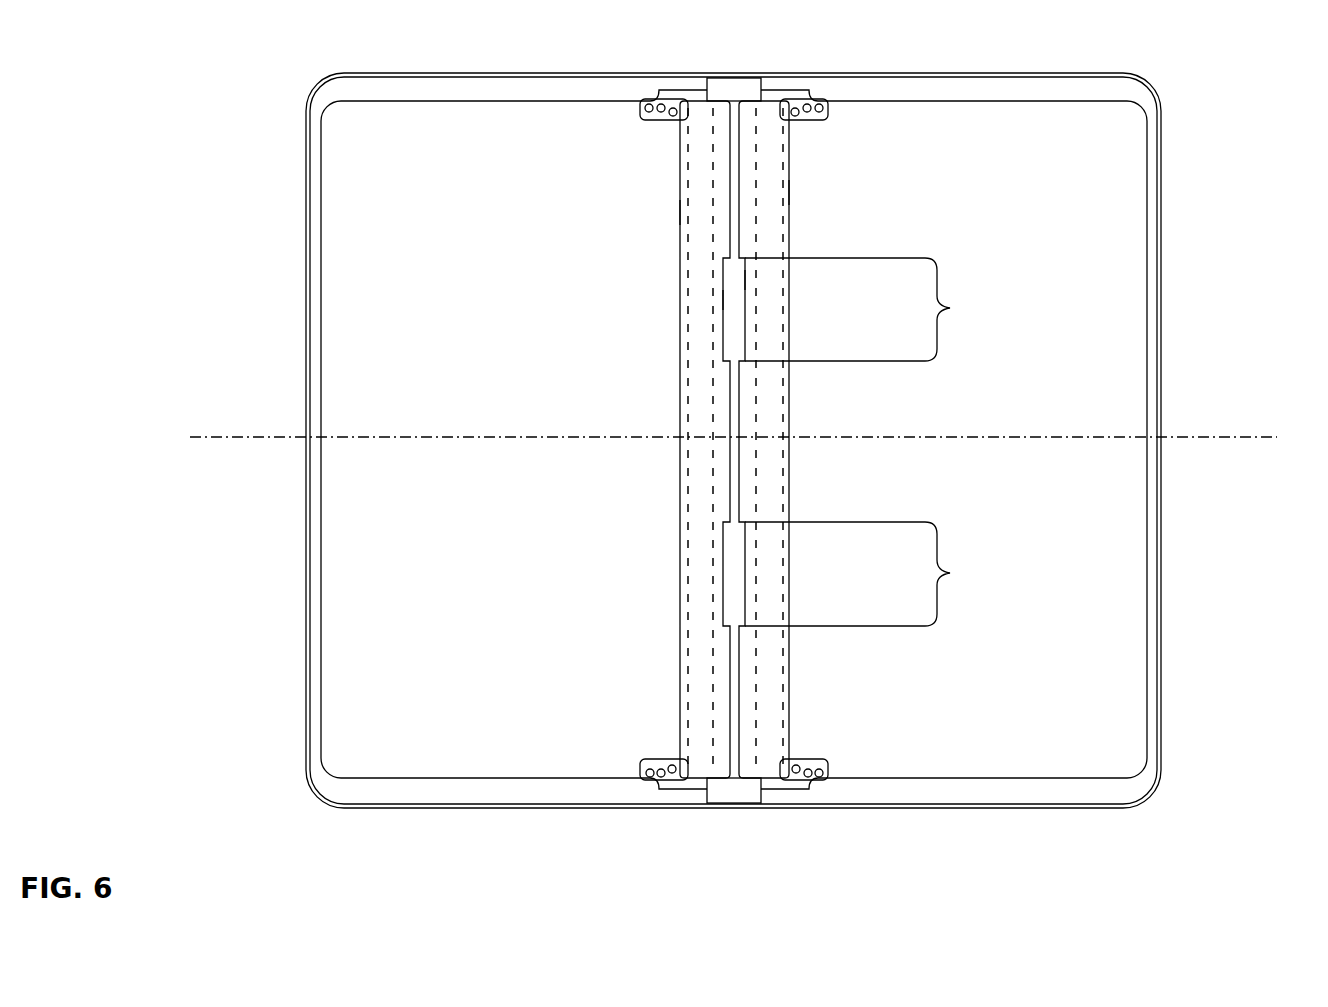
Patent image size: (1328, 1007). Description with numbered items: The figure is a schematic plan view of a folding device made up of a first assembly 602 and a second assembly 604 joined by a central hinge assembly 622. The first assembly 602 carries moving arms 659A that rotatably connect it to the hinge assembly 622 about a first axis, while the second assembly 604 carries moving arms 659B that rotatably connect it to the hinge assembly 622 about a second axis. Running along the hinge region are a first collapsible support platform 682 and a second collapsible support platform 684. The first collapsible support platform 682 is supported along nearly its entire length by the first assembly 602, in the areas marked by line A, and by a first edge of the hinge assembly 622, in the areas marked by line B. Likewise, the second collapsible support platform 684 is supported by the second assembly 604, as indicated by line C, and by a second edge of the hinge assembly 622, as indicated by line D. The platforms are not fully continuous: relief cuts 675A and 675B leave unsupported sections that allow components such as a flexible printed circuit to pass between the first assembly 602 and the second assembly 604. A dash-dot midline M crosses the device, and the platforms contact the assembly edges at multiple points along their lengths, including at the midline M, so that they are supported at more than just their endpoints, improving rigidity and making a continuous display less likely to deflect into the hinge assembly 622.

The first assembly 602 is at (307, 318).
The second assembly 604 is at (1153, 535).
The hinge assembly 622 is at (727, 806).
The moving arms 659A is at (685, 88).
The moving arms 659B is at (785, 88).
The relief cut 675A is at (885, 309).
The relief cut 675B is at (885, 574).
The first collapsible support platform 682 is at (713, 410).
The second collapsible support platform 684 is at (770, 405).
The line A is at (685, 210).
The line B is at (713, 297).
The line C is at (783, 193).
The line D is at (758, 278).
The midline M is at (1247, 437).